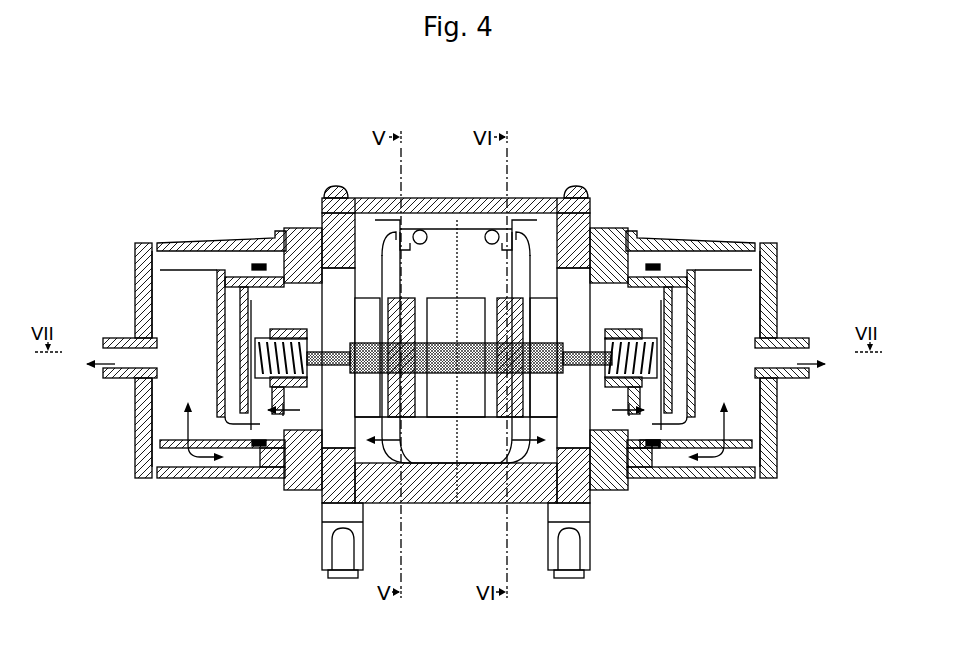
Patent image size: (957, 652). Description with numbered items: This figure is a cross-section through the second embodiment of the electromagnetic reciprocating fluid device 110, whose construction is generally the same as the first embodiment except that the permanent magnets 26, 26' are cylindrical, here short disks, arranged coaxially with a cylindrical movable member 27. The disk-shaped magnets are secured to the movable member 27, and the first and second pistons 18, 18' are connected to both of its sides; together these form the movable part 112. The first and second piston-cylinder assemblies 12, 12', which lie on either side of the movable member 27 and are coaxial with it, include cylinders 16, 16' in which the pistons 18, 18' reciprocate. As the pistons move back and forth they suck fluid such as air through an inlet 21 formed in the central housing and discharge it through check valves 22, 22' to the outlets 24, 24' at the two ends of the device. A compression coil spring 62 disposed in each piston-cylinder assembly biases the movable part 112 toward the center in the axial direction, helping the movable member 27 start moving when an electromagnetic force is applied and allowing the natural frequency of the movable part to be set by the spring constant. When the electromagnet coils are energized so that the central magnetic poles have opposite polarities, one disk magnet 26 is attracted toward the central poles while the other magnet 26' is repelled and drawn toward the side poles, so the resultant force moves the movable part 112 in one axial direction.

The electromagnetic reciprocating fluid device 110 is at (443, 134).
The movable part 112 is at (519, 252).
The first piston-cylinder assembly 12 is at (210, 305).
The second piston-cylinder assembly 12' is at (701, 305).
The cylinder 16 is at (325, 395).
The cylinder 16' is at (588, 395).
The first piston 18 is at (287, 358).
The second piston 18' is at (625, 379).
The inlet 21 is at (405, 500).
The check valve 22 is at (252, 410).
The check valve 22' is at (680, 428).
The outlet 24 is at (112, 345).
The outlet 24' is at (806, 344).
The permanent magnet 26 is at (416, 287).
The permanent magnet 26' is at (495, 287).
The movable member 27 is at (480, 365).
The compression coil spring 62 is at (655, 475).